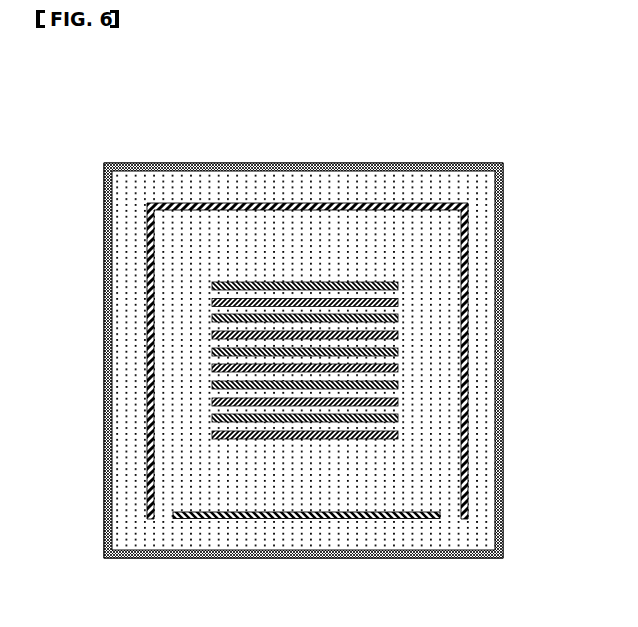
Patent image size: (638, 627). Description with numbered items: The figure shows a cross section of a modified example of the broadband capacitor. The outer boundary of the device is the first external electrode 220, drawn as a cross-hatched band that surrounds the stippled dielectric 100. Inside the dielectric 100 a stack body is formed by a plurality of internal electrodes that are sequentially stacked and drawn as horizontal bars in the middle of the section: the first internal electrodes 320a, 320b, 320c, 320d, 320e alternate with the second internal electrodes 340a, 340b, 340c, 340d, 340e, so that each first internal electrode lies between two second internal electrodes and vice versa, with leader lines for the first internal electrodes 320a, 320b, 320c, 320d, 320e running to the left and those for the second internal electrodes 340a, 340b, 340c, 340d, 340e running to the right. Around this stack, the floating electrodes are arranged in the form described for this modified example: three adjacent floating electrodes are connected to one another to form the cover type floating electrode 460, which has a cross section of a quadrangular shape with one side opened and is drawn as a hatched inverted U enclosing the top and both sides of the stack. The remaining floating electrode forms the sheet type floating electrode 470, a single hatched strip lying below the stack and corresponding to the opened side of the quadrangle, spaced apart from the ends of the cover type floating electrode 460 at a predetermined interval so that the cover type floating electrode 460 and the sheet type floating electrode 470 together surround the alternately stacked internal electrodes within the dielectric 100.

The dielectric 100 is at (290, 163).
The first external electrode 220 is at (160, 163).
The cover type floating electrode 460 is at (418, 203).
The sheet type floating electrode 470 is at (394, 518).
The first internal electrode 320a is at (212, 302).
The first internal electrode 320b is at (212, 335).
The first internal electrode 320c is at (212, 368).
The first internal electrode 320d is at (212, 402).
The first internal electrode 320e is at (212, 435).
The second internal electrode 340a is at (398, 286).
The second internal electrode 340b is at (398, 318).
The second internal electrode 340c is at (398, 352).
The second internal electrode 340d is at (398, 385).
The second internal electrode 340e is at (398, 418).